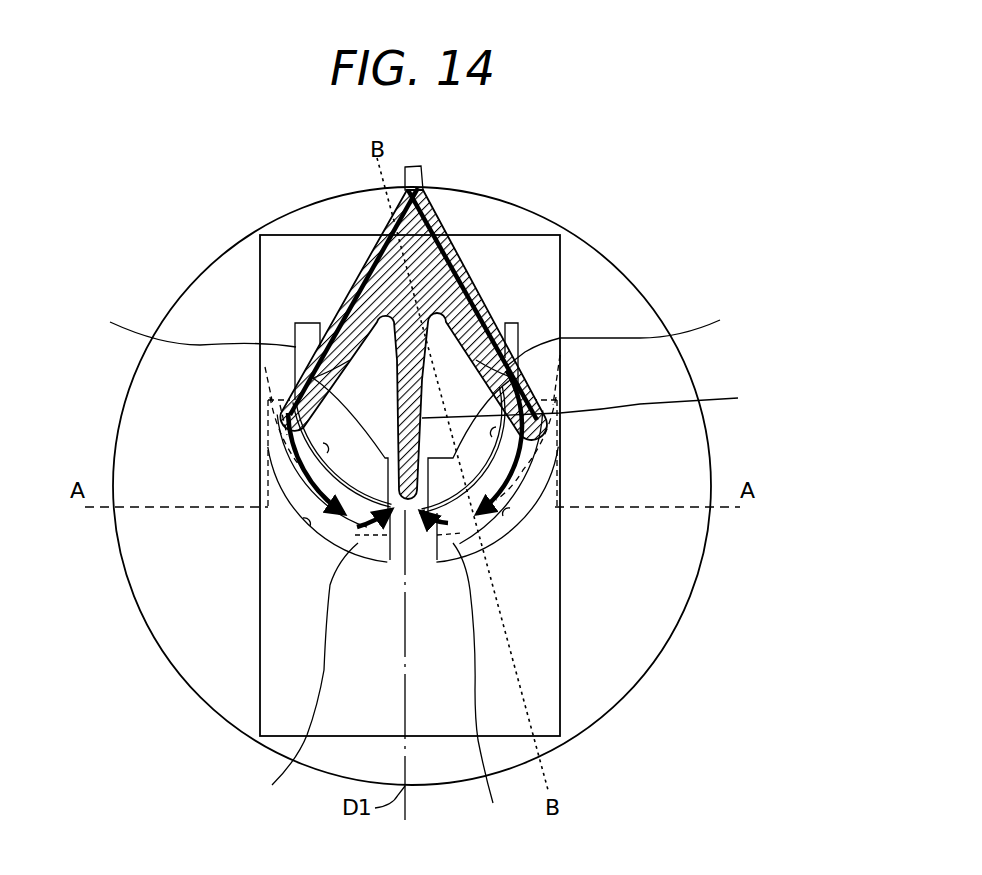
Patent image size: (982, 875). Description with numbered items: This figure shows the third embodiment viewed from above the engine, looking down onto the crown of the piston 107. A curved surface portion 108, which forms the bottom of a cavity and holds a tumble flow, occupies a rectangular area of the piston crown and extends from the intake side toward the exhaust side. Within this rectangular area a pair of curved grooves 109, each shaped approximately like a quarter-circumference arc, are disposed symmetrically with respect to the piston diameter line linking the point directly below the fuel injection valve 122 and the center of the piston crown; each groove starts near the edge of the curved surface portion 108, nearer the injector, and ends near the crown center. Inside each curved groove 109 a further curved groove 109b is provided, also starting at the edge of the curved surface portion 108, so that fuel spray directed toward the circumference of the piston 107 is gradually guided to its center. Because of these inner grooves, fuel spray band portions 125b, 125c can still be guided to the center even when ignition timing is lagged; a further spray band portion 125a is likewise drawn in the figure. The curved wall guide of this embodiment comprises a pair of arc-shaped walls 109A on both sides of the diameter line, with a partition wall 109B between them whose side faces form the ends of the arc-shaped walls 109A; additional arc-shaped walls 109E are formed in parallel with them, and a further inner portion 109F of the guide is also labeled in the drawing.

The piston 107 is at (292, 213).
The curved surface portion 108 is at (562, 682).
The curved groove 109 is at (372, 690).
The arc-shaped wall 109A is at (303, 518).
The partition wall 109B is at (390, 550).
The arc-shaped wall 109E is at (327, 453).
The arm inner portion 109F is at (372, 430).
The curved groove 109b is at (308, 330).
The fuel injection valve 122 is at (424, 182).
The wire 125a is at (606, 401).
The fuel spray band portion 125b is at (175, 327).
The fuel spray band portion 125c is at (640, 333).